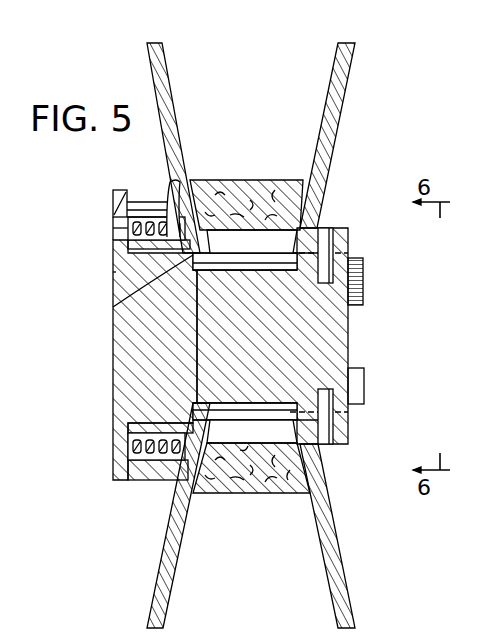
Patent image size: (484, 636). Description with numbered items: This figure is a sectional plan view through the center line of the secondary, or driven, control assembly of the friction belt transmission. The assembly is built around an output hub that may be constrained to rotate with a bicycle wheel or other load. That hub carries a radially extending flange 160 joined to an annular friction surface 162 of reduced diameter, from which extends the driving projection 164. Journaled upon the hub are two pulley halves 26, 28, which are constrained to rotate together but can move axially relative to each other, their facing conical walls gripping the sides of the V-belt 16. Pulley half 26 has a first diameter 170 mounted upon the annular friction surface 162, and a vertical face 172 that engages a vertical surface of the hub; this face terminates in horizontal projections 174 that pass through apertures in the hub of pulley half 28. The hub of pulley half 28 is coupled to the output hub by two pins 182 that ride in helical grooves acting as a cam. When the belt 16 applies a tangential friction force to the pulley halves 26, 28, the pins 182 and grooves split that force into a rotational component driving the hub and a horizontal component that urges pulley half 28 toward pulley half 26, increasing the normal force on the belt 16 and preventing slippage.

The V-belt 16 is at (260, 181).
The pulley half 26 is at (167, 573).
The pulley half 28 is at (333, 581).
The radially extending flange 160 is at (113, 202).
The annular friction surface 162 is at (161, 364).
The driving projection 164 is at (275, 335).
The first diameter 170 is at (113, 272).
The vertical face 172 is at (113, 307).
The horizontal projections 174 is at (363, 303).
The pins 182 is at (323, 226).